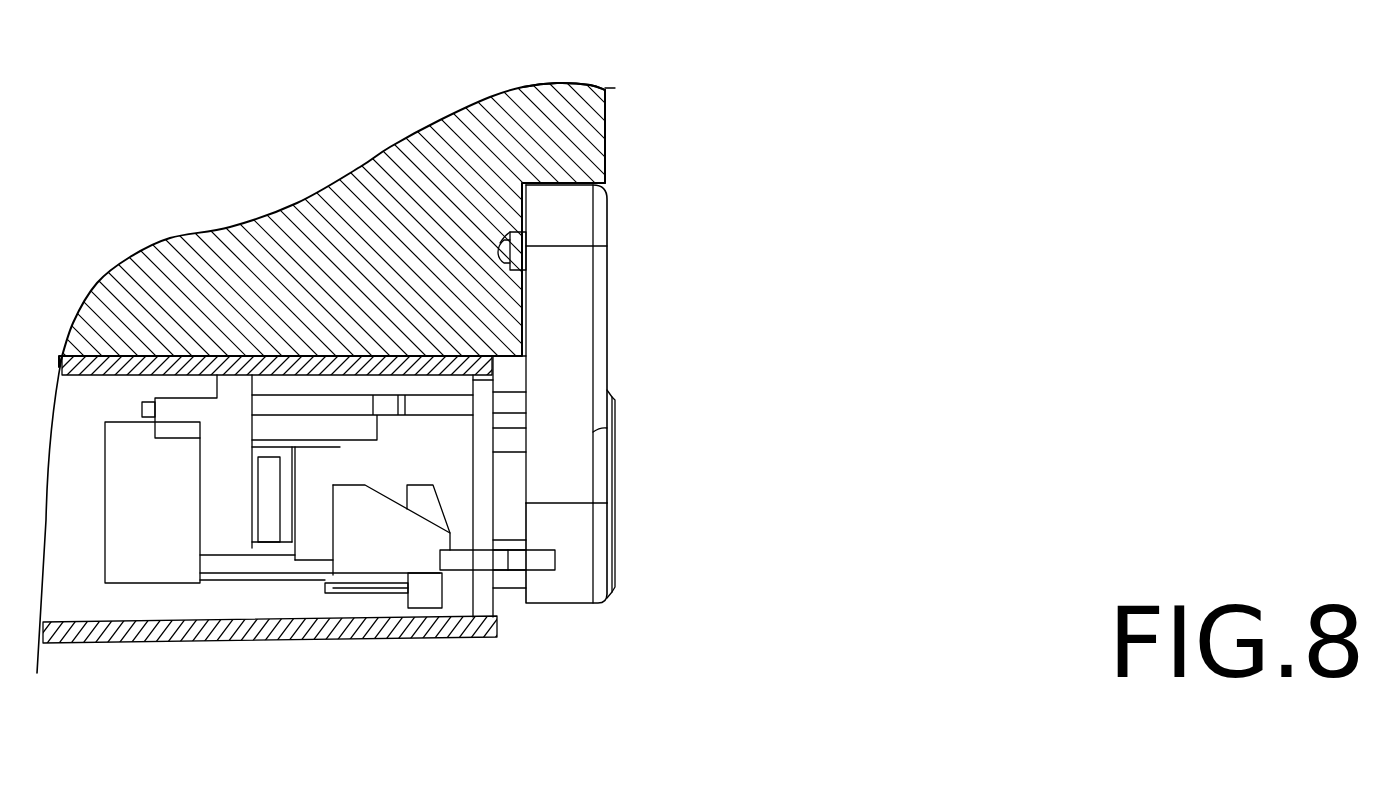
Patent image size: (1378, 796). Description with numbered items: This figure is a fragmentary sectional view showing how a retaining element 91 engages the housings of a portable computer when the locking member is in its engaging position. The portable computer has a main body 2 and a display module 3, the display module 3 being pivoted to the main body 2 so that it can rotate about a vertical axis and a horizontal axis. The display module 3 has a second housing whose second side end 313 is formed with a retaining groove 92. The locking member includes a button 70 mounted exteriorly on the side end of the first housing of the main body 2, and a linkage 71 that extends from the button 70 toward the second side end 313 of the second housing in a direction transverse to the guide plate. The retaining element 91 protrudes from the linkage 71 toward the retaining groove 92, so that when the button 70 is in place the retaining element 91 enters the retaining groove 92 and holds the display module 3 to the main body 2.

The main body 2 is at (200, 658).
The display module 3 is at (285, 192).
The second side end 313 is at (605, 137).
The button 70 is at (615, 552).
The linkage 71 is at (600, 332).
The retaining element 91 is at (500, 243).
The retaining groove 92 is at (510, 258).